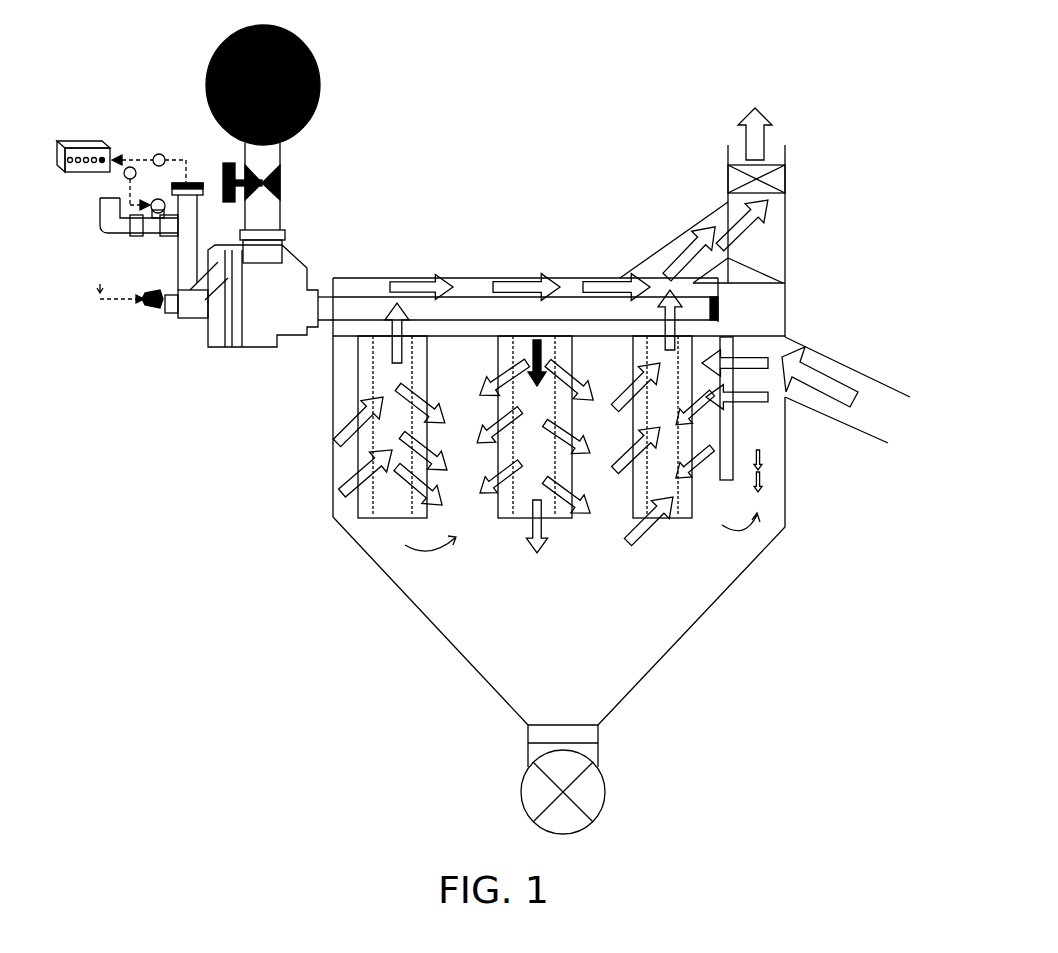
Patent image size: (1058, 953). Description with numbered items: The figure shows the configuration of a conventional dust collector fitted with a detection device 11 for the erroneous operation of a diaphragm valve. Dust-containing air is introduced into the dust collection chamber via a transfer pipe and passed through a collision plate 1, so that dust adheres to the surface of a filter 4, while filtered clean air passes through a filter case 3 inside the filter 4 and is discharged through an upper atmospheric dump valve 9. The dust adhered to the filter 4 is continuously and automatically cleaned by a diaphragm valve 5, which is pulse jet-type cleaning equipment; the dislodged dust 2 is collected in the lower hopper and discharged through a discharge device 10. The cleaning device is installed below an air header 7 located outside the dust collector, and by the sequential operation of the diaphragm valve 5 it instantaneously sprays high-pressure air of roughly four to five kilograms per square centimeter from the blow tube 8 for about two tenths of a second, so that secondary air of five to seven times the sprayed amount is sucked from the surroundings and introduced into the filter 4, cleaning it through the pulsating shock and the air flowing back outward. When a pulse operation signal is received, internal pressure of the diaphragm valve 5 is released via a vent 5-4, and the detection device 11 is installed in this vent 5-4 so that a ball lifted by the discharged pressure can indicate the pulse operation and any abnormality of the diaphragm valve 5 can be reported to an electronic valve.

The collision plate 1 is at (723, 447).
The dust 2 is at (410, 610).
The filter case 3 is at (333, 517).
The filter 4 is at (357, 405).
The diaphragm valve 5 is at (230, 348).
The vent 5-4 is at (183, 313).
The air header 7 is at (313, 60).
The blow tube 8 is at (467, 310).
The upper atmospheric dump valve 9 is at (785, 185).
The discharge device 10 is at (608, 783).
The detection device for the erroneous operation of a diaphragm valve 11 is at (193, 177).